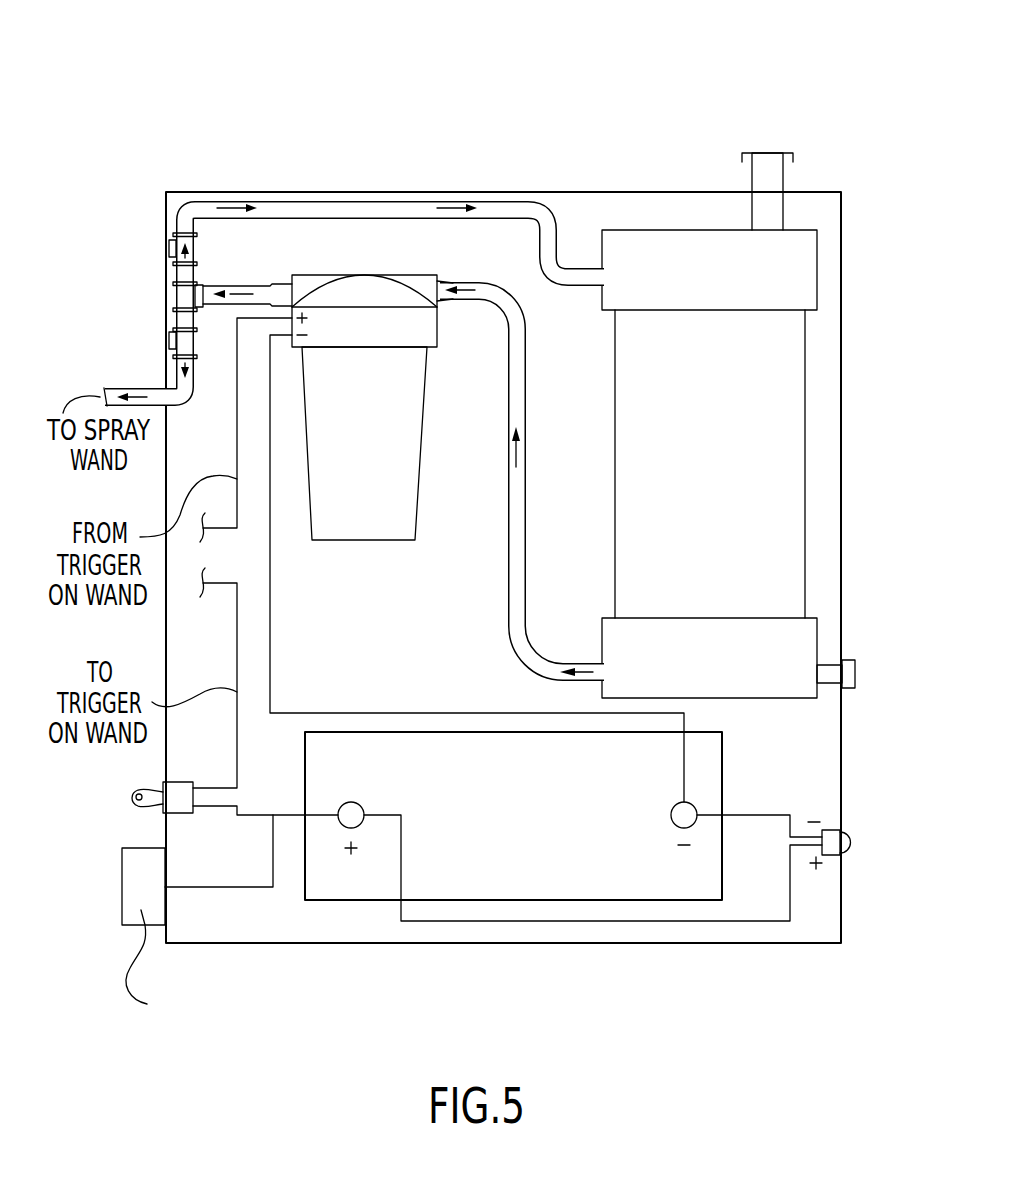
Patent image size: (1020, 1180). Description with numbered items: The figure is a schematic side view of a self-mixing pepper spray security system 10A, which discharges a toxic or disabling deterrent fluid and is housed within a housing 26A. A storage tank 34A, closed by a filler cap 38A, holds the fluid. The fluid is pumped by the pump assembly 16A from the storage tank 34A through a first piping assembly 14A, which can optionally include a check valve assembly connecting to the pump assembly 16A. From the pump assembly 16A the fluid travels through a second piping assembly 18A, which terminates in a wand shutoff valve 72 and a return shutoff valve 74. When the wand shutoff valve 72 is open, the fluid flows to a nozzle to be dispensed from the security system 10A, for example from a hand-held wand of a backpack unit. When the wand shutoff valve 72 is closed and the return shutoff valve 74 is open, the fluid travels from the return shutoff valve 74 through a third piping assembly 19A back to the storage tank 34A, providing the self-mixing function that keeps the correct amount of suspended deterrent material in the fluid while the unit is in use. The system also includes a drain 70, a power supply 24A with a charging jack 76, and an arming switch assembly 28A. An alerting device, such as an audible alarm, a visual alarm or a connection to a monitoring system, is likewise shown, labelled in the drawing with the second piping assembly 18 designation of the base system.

The security system 10A is at (418, 88).
The first piping assembly 14A is at (527, 366).
The pump assembly 16A is at (367, 541).
The second piping assembly 18A is at (203, 285).
The third piping assembly 19A is at (279, 218).
The power supply 24A is at (722, 762).
The housing 26A is at (553, 945).
The arming switch assembly 28A is at (160, 812).
The storage tank 34A is at (614, 457).
The filler cap 38A is at (765, 153).
The drain 70 is at (856, 675).
The wand shutoff valve 72 is at (168, 340).
The return shutoff valve 74 is at (168, 248).
The charging jack 76 is at (848, 843).
The second piping assembly 18 is at (122, 925).